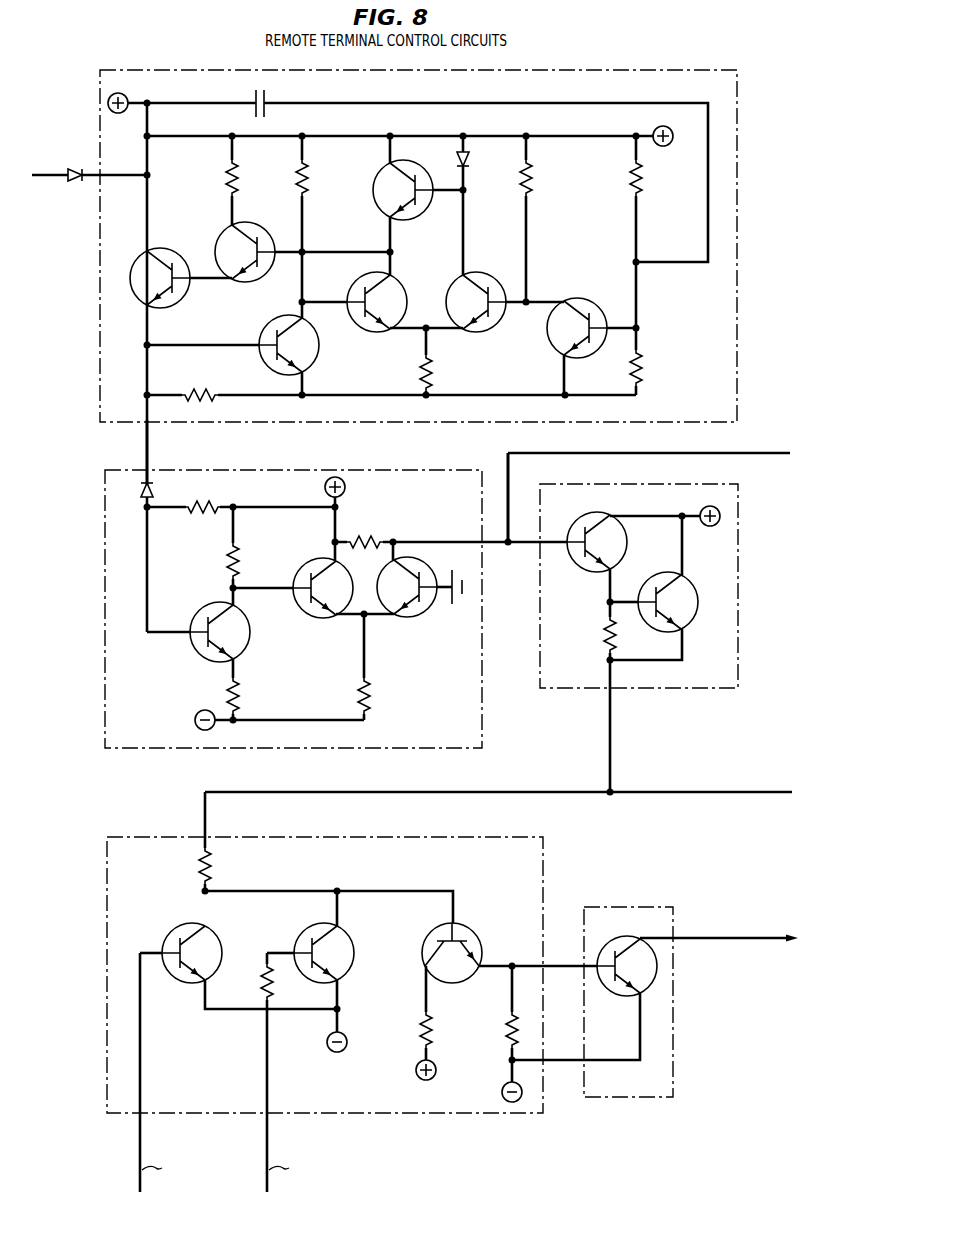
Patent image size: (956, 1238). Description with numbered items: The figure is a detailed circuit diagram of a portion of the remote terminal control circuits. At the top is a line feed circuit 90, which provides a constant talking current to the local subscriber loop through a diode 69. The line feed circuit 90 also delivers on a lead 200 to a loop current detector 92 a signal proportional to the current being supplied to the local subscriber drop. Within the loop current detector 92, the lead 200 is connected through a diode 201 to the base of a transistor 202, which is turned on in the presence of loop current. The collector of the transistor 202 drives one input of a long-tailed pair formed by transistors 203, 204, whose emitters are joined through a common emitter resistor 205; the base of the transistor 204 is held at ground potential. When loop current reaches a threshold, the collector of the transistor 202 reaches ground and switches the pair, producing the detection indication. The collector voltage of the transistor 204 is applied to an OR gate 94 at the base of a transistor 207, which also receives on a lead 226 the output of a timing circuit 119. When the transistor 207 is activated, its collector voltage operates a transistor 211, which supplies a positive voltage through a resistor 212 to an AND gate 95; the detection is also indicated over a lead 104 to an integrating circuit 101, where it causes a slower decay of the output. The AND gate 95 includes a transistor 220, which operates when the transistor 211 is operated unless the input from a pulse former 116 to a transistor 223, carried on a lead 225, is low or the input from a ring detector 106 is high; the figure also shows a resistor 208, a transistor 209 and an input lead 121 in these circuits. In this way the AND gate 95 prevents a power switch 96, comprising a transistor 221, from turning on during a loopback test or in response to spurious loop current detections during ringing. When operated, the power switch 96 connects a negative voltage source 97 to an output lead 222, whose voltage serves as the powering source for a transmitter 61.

The line feed circuit 90 is at (712, 70).
The diode 69 is at (89, 163).
The lead 200 is at (147, 448).
The loop current detector 92 is at (105, 572).
The diode 201 is at (132, 490).
The transistor 202 is at (210, 610).
The transistor 203 is at (312, 616).
The transistor 204 is at (418, 614).
The common emitter resistor 205 is at (385, 667).
The lead 226 is at (506, 468).
The timing circuit 119 is at (649, 442).
The OR gate 94 is at (720, 485).
The transistor 207 is at (594, 521).
The transistor 211 is at (689, 584).
The resistor 208 is at (595, 635).
The lead 104 is at (498, 797).
The integrating circuit 101 is at (720, 794).
The AND gate 95 is at (518, 837).
The resistor 212 is at (222, 841).
The transistor 223 is at (184, 933).
The transistor 209 is at (318, 933).
The transistor 220 is at (444, 928).
The lead 225 is at (181, 1072).
The pulse former 116 is at (142, 1145).
The input lead from 106 121 is at (307, 1072).
The ring detector 106 is at (269, 1145).
The negative voltage source 97 is at (502, 1092).
The power switch 96 is at (684, 907).
The transistor 221 is at (627, 938).
The output lead 222 is at (719, 946).
The transmitter 61 is at (735, 940).